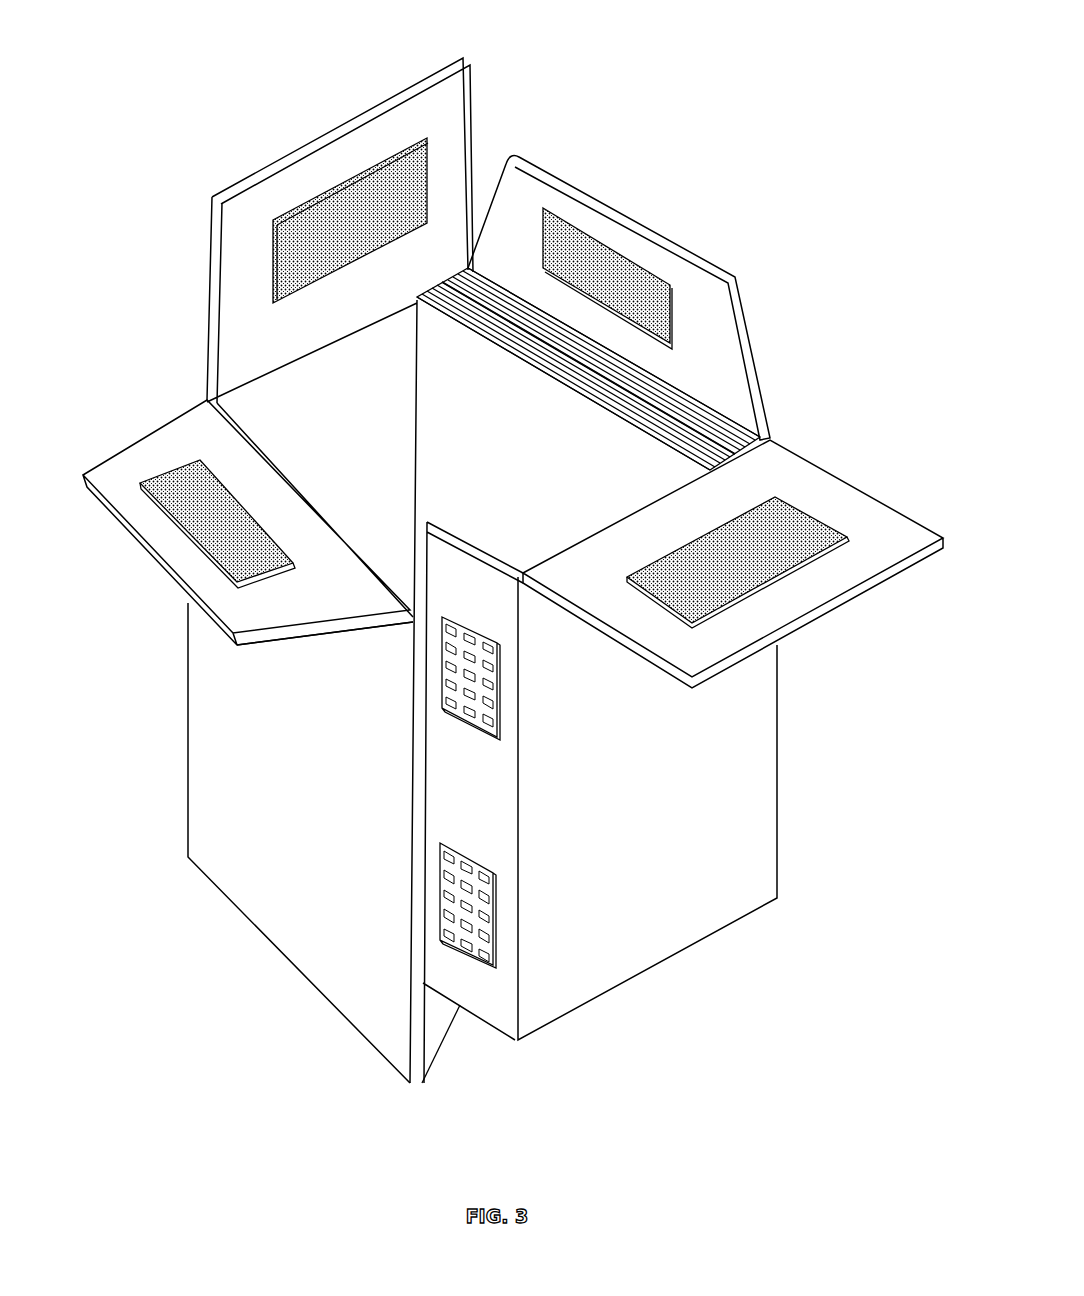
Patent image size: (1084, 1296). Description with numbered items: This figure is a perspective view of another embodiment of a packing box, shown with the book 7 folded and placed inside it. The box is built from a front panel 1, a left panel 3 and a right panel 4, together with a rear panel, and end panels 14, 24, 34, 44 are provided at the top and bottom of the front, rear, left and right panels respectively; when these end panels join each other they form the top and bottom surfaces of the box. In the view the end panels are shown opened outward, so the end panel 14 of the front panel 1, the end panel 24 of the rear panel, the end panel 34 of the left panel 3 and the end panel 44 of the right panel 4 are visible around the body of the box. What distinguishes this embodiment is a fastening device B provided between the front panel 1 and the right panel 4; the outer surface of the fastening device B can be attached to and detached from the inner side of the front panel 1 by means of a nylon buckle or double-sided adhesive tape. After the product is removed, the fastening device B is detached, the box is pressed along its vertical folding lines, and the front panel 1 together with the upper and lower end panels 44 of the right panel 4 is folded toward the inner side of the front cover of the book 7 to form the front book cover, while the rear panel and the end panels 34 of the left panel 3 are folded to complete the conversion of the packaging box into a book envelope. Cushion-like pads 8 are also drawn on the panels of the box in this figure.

The front panel 1 is at (288, 678).
The left panel 3 is at (307, 442).
The right panel 4 is at (613, 843).
The book 7 is at (563, 327).
The cushioning pads 8 is at (763, 527).
The end panel 14 is at (527, 1097).
The end panel 24 is at (525, 207).
The end panel 34 is at (248, 273).
The end panel 44 is at (738, 638).
The fastening device B is at (493, 923).